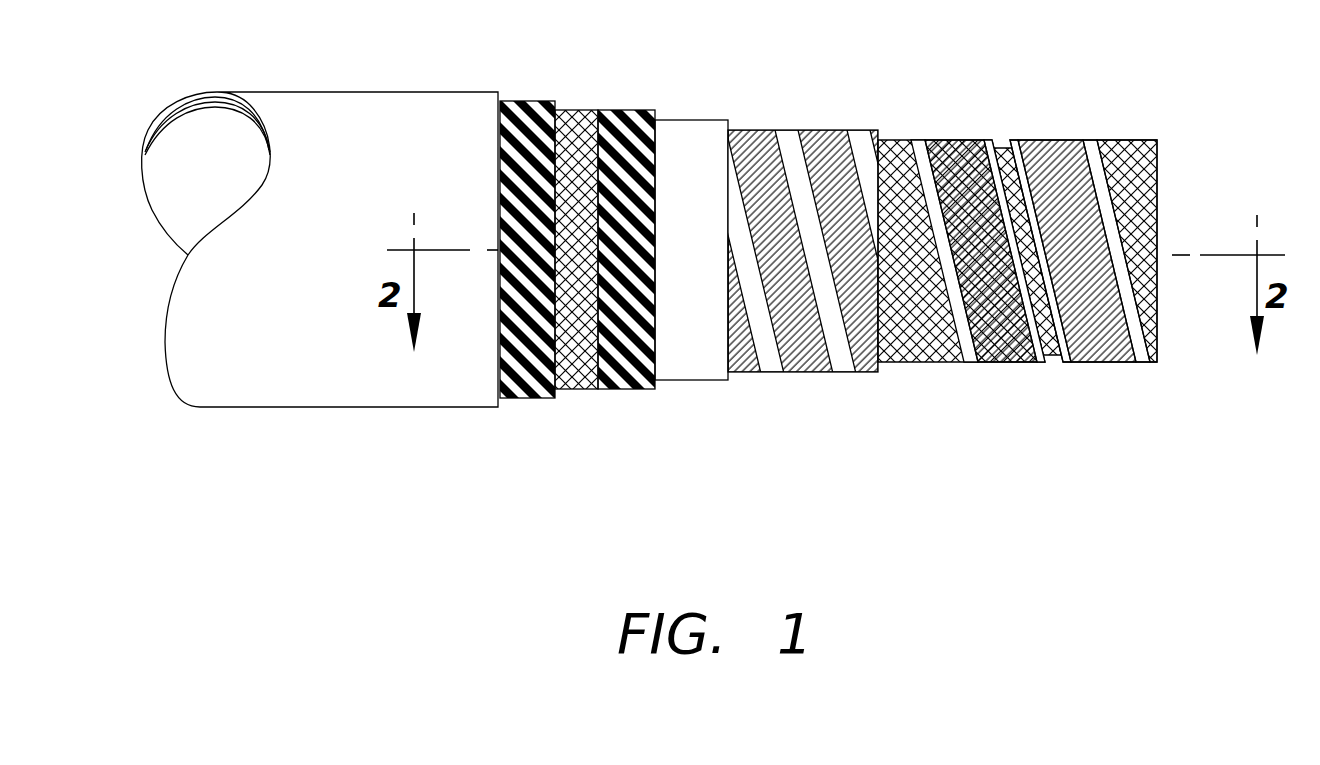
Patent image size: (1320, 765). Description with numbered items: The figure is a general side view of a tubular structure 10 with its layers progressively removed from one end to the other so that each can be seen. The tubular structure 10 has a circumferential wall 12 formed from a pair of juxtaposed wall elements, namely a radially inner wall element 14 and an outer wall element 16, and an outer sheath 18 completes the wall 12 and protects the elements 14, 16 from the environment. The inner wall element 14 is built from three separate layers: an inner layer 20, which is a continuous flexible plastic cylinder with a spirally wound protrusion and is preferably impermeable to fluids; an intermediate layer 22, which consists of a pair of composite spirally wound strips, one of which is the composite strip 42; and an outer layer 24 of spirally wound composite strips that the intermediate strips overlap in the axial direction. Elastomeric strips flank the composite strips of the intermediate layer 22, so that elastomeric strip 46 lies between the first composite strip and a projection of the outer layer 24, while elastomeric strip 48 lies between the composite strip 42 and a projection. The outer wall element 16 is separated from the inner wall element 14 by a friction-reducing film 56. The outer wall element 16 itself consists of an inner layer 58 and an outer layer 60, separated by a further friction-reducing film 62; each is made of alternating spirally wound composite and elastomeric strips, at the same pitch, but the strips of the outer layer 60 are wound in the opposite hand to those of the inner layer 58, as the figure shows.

The tubular structure 10 is at (341, 75).
The circumferential wall 12 is at (322, 270).
The inner wall element 14 is at (198, 108).
The outer wall element 16 is at (200, 98).
The outer sheath 18 is at (217, 91).
The inner layer 20 is at (1127, 140).
The intermediate layer 22 is at (918, 363).
The outer layer 24 is at (808, 372).
The composite spirally wound strip 42 is at (1003, 363).
The elastomeric strip 46 is at (1068, 363).
The elastomeric strip 48 is at (1042, 363).
The friction-reducing film 56 is at (692, 380).
The inner layer 58 is at (623, 390).
The outer layer 60 is at (523, 398).
The friction-reducing film 62 is at (573, 390).